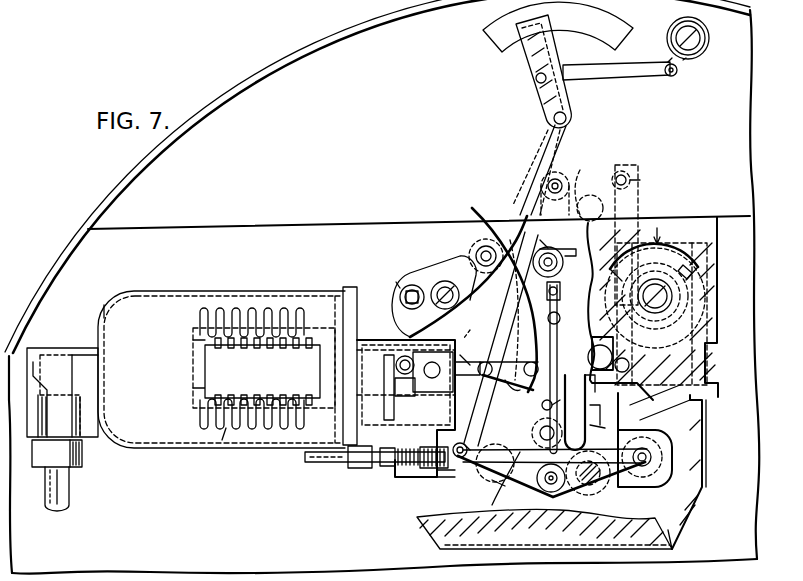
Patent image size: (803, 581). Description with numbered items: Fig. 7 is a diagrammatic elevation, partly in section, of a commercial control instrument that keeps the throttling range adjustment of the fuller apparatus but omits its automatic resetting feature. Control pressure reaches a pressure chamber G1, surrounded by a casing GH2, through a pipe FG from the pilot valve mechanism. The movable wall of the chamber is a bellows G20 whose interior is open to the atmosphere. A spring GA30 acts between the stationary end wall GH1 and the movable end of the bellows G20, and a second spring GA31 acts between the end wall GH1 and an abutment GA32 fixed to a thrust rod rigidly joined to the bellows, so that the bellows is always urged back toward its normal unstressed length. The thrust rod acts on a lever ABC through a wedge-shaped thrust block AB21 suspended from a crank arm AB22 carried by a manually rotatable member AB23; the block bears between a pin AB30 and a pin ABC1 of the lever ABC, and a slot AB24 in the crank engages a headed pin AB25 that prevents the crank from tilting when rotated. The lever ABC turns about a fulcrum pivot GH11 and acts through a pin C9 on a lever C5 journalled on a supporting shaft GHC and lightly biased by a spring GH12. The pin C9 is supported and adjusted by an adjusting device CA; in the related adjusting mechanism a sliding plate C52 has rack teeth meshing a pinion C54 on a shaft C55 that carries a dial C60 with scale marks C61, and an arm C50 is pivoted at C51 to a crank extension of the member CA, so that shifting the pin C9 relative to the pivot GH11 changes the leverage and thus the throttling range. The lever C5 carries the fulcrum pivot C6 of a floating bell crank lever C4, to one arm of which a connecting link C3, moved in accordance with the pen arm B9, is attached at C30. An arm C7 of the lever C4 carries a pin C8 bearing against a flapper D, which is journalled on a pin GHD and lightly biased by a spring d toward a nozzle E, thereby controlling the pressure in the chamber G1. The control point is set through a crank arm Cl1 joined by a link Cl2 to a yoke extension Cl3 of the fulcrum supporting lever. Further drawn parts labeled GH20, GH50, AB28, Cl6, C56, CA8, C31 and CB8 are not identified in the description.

The pressure chamber G1 is at (166, 322).
The casing GH2 is at (128, 297).
The bellows element G20 is at (202, 312).
The spring GA30 is at (222, 440).
The pipe FG is at (62, 496).
The stationary end wall GH1 is at (348, 292).
The abutment GA32 is at (440, 405).
The spring GA31 is at (347, 400).
The connection point C30 is at (444, 470).
The slot AB24 is at (406, 292).
The manually rotatable member AB23 is at (442, 286).
The pin AB25 is at (398, 273).
The crank arm AB22 is at (461, 270).
The housing GH20 is at (470, 231).
The housing plate GH50 is at (680, 518).
The pin GHD is at (478, 224).
The supporting shaft GHC is at (547, 248).
The bias spring GH12 is at (541, 203).
The thrust block AB21 is at (495, 344).
The pin ABC1 is at (540, 440).
The nozzle E is at (459, 460).
The pin AB30 is at (484, 320).
The lever part AB28 is at (468, 357).
The flapper D is at (558, 338).
The spring d is at (561, 287).
The pin C9 is at (560, 318).
The pin C8 is at (590, 362).
The yoke extension Cl3 is at (539, 59).
The link Cl2 is at (633, 72).
The crank arm Cl1 is at (677, 74).
The knob Cl6 is at (709, 45).
The pen arm B9 is at (567, 122).
The connecting link C3 is at (552, 128).
The pivotal connection C51 is at (557, 178).
The arm C50 is at (591, 195).
The sliding plate C52 is at (622, 171).
The adjusting device CA is at (640, 170).
The slot C56 is at (640, 180).
The shaft C55 is at (658, 290).
The pinion C54 is at (684, 266).
The dial C60 is at (687, 257).
The scale marks C61 is at (695, 270).
The lever C5 is at (590, 392).
The pin CA8 is at (552, 405).
The arm C7 is at (590, 412).
The fulcrum pivot GH11 is at (590, 428).
The pulley C31 is at (643, 447).
The bell crank lever C4 is at (503, 482).
The lever ABC is at (487, 484).
The pulley CB8 is at (578, 482).
The fulcrum pivot C6 is at (551, 493).